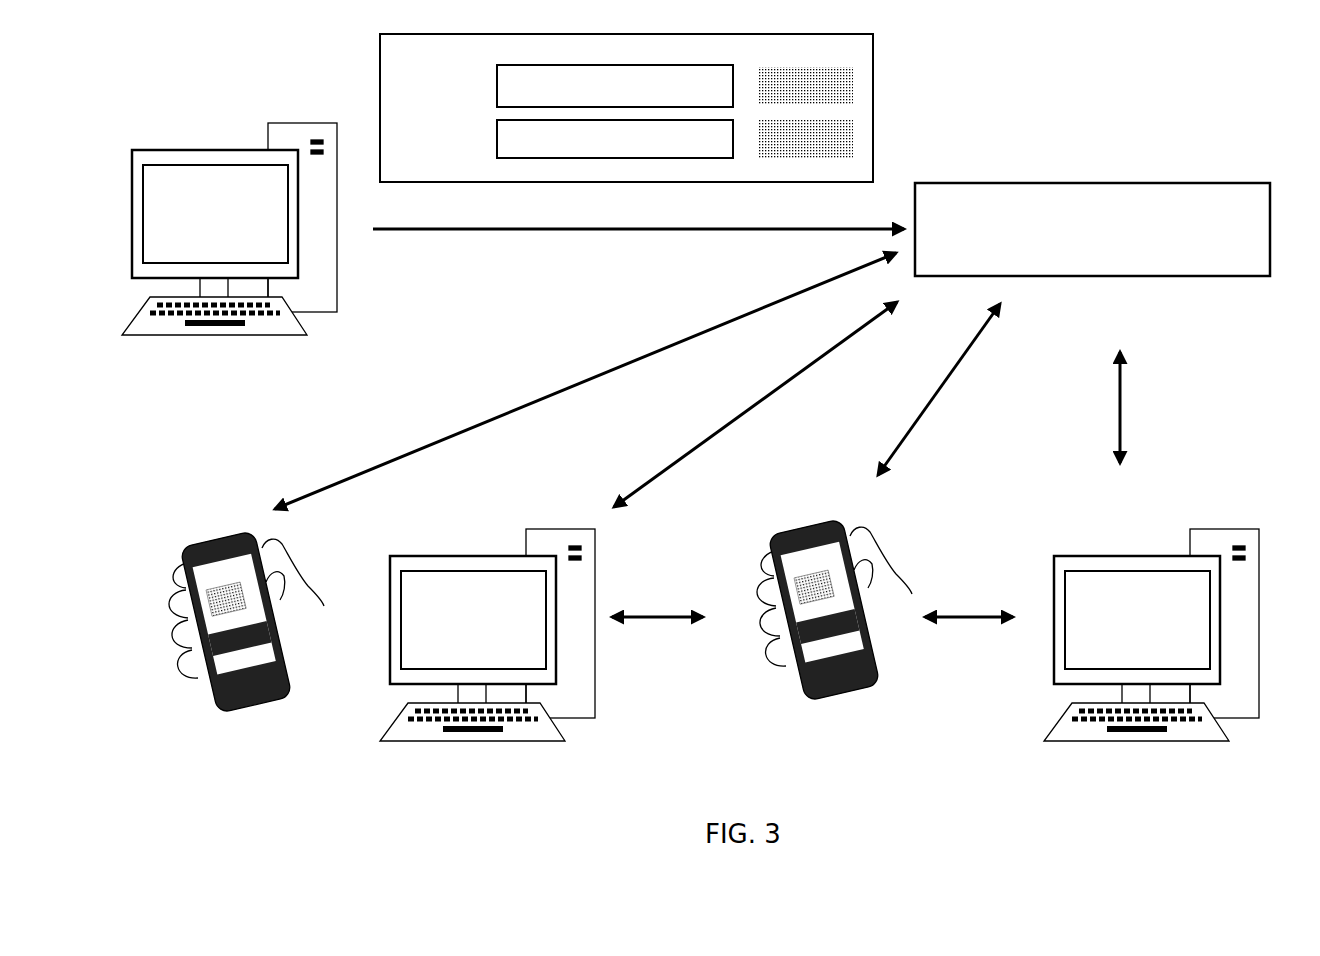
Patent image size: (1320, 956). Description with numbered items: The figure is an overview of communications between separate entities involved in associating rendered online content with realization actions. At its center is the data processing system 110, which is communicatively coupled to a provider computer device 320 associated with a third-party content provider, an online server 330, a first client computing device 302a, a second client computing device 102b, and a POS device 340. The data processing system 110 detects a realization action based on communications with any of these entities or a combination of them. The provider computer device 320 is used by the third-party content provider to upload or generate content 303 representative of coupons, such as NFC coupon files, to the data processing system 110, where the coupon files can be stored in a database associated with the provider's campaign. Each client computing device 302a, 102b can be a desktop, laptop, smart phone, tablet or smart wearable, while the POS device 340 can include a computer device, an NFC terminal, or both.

The provider computer device 320 is at (205, 148).
The content 303 is at (873, 62).
The data processing system 110 is at (1110, 262).
The first client computing device 302a is at (207, 546).
The online server 330 is at (487, 554).
The mobile device 102b is at (795, 531).
The POS device 340 is at (1203, 528).